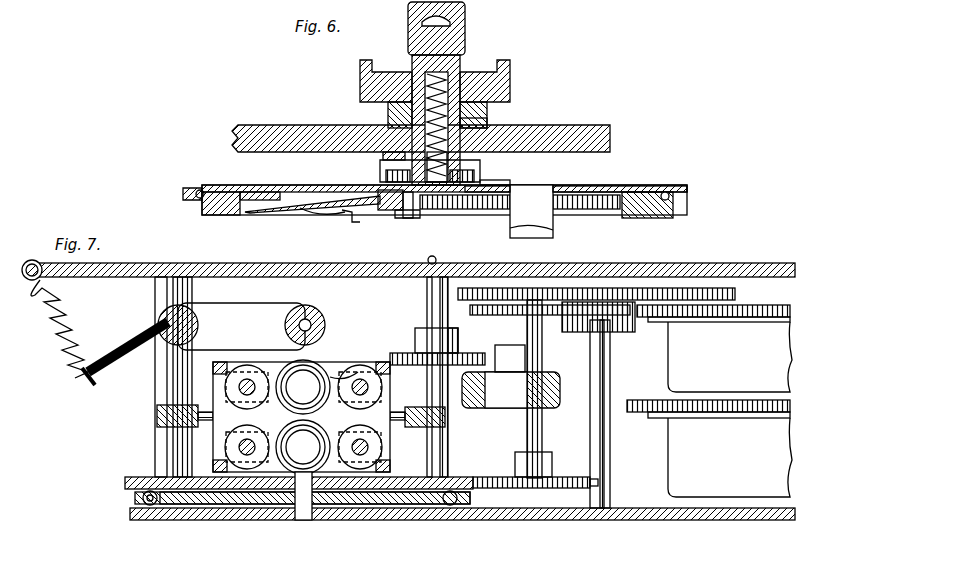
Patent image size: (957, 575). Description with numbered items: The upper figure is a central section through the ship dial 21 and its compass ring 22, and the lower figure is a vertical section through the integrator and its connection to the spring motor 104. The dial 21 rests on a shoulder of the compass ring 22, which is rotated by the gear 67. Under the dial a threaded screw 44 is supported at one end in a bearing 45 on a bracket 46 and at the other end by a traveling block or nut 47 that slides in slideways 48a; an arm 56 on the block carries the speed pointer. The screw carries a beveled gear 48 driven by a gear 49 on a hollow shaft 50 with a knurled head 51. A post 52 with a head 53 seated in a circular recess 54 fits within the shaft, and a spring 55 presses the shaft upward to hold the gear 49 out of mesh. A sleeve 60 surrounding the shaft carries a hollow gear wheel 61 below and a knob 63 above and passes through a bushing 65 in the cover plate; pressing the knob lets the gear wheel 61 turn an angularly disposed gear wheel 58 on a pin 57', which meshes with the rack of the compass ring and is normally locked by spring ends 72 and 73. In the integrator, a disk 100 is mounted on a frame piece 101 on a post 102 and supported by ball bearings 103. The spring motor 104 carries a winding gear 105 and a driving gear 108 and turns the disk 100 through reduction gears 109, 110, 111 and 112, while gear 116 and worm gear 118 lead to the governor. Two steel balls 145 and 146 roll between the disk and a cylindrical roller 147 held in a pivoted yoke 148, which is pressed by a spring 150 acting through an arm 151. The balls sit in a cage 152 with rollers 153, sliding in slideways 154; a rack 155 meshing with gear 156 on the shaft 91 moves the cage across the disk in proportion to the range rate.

In FIG. 6, the knurled head 51 is at (462, 16).
In FIG. 6, the hollow shaft 50 is at (448, 72).
In FIG. 6, the spring 55 is at (460, 78).
In FIG. 6, the hub or knob 63 is at (510, 84).
In FIG. 6, the gear 67 is at (392, 152).
In FIG. 6, the post 52 is at (400, 140).
In FIG. 6, the sleeve 60 is at (388, 113).
In FIG. 6, the bushing 65 is at (490, 122).
In FIG. 6, the compass ring 22 is at (200, 188).
In FIG. 6, the upturned end 72 is at (255, 192).
In FIG. 6, the ship dial 21 is at (300, 200).
In FIG. 6, the pin 57' is at (351, 186).
In FIG. 6, the gear wheel 61 is at (380, 176).
In FIG. 6, the circular recess 54 is at (478, 186).
In FIG. 6, the gear 49 is at (497, 180).
In FIG. 6, the traveling block or nut 47 is at (560, 186).
In FIG. 6, the upturned end 73 is at (225, 215).
In FIG. 6, the angularly disposed gear wheel 58 is at (320, 212).
In FIG. 6, the bracket 46 is at (358, 222).
In FIG. 6, the beveled gear 48 is at (405, 218).
In FIG. 6, the bearing 45 is at (410, 218).
In FIG. 6, the head 53 is at (458, 210).
In FIG. 6, the threaded screw 44 is at (500, 212).
In FIG. 6, the arm 56 is at (553, 232).
In FIG. 6, the slideways 48a is at (630, 218).
In FIG. 7, the shaft 91 is at (438, 260).
In FIG. 7, the gear 111 is at (560, 288).
In FIG. 7, the driving gear 108 is at (770, 300).
In FIG. 7, the spring 150 is at (70, 310).
In FIG. 7, the arm 151 is at (140, 350).
In FIG. 7, the yoke 148 is at (245, 297).
In FIG. 7, the cylindrical roller 147 is at (320, 312).
In FIG. 7, the rack 155 is at (427, 330).
In FIG. 7, the steel ball 145 is at (325, 362).
In FIG. 7, the rollers 153 is at (392, 355).
In FIG. 7, the gear 156 is at (500, 372).
In FIG. 7, the gear 116 is at (515, 355).
In FIG. 7, the gear 110 is at (580, 318).
In FIG. 7, the gear 109 is at (636, 332).
In FIG. 7, the slideways 154 is at (160, 405).
In FIG. 7, the worm gear 118 is at (488, 380).
In FIG. 7, the gear 112 is at (560, 476).
In FIG. 7, the gear 105 is at (633, 412).
In FIG. 7, the spring motor 104 is at (730, 409).
In FIG. 7, the cage 152 is at (213, 420).
In FIG. 7, the steel ball 146 is at (303, 417).
In FIG. 7, the disk 100 is at (125, 480).
In FIG. 7, the ball bearings 103 is at (152, 505).
In FIG. 7, the frame piece 101 is at (272, 512).
In FIG. 7, the post 102 is at (318, 508).